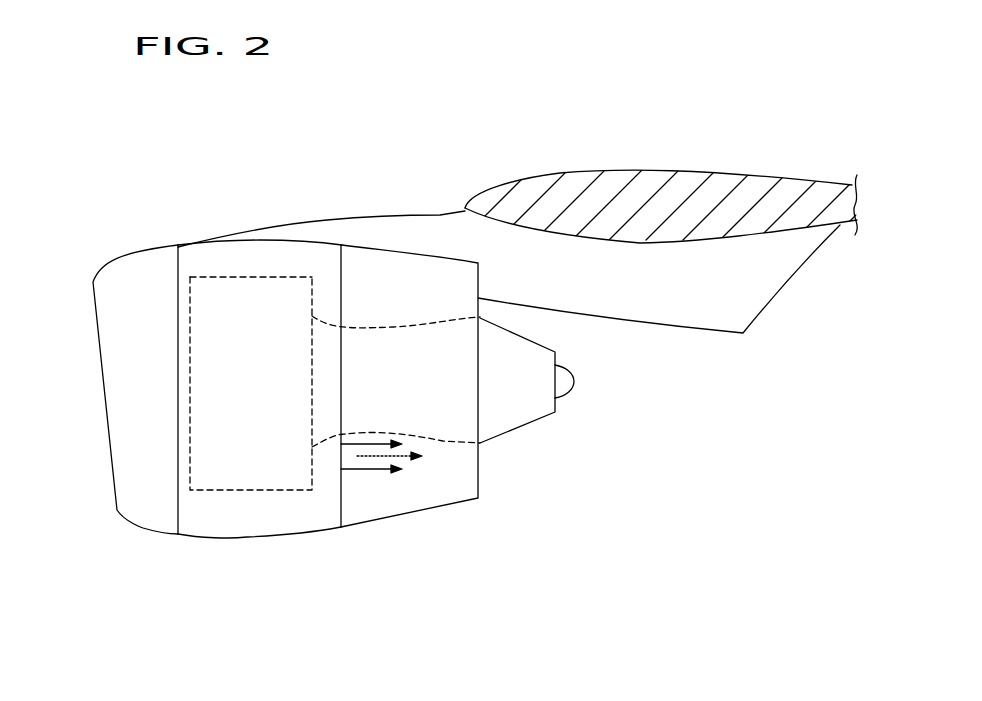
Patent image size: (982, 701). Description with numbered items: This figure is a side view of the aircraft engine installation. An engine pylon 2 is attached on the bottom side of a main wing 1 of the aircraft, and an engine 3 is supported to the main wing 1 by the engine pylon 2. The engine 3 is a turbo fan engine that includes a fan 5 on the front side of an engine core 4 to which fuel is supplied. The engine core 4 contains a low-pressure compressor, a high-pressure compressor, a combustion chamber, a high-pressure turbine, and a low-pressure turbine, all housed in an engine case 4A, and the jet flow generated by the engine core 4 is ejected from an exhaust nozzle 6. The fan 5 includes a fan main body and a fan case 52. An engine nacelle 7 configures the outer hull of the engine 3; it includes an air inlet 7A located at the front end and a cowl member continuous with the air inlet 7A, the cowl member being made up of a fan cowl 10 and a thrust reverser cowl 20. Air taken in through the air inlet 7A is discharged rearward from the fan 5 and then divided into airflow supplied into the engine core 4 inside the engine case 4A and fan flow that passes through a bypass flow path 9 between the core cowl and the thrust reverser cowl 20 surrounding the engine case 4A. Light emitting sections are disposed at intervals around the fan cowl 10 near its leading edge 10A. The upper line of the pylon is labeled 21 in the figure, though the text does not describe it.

The main wing 1 is at (733, 172).
The engine pylon 2 is at (509, 231).
The engine 3 is at (72, 250).
The engine core 4 is at (396, 308).
The engine case 4A is at (383, 327).
The fan 5 is at (245, 329).
The fan case 52 is at (215, 277).
The exhaust nozzle 6 is at (533, 412).
The engine nacelle 7 is at (285, 401).
The air inlet 7A is at (145, 528).
The bypass flow path 9 is at (440, 475).
The fan cowl 10 is at (229, 380).
The leading edge 10A is at (180, 245).
The thrust reverser cowl 20 is at (387, 438).
The pylon fairing upper line 21 is at (327, 220).